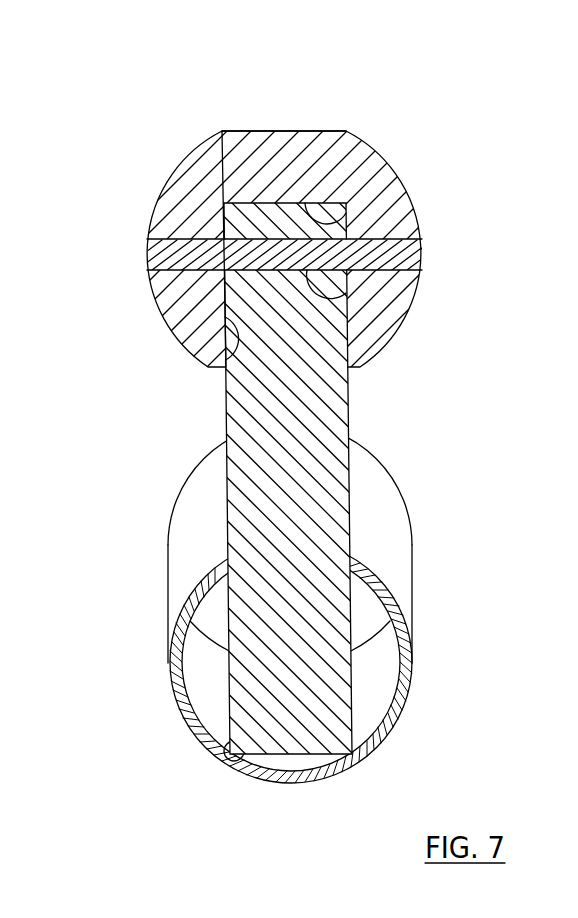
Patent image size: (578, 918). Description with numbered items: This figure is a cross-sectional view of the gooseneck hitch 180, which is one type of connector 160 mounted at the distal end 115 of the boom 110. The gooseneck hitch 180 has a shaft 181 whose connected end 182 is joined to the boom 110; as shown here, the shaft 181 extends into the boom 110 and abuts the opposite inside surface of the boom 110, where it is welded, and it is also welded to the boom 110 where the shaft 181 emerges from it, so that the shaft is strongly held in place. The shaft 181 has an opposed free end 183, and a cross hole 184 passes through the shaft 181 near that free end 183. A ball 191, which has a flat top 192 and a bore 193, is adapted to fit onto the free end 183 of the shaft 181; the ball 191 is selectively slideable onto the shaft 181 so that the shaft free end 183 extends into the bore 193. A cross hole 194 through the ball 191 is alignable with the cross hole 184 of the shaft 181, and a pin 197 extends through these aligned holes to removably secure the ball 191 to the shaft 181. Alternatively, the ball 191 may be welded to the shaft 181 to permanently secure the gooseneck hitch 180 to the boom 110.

The boom 110 is at (350, 629).
The distal end 115 is at (368, 497).
The connector 160 is at (289, 389).
The gooseneck hitch 180 is at (289, 199).
The shaft 181 is at (350, 412).
The connected end 182 is at (230, 748).
The free end 183 is at (376, 196).
The cross hole 184 is at (348, 293).
The ball 191 is at (178, 164).
The flat top 192 is at (278, 131).
The bore 193 is at (224, 359).
The cross hole 194 is at (180, 238).
The pin 197 is at (147, 258).